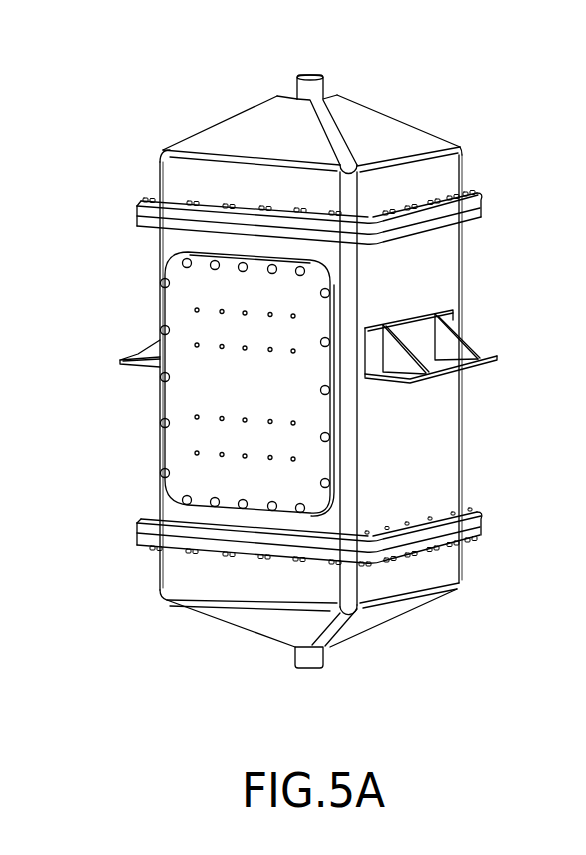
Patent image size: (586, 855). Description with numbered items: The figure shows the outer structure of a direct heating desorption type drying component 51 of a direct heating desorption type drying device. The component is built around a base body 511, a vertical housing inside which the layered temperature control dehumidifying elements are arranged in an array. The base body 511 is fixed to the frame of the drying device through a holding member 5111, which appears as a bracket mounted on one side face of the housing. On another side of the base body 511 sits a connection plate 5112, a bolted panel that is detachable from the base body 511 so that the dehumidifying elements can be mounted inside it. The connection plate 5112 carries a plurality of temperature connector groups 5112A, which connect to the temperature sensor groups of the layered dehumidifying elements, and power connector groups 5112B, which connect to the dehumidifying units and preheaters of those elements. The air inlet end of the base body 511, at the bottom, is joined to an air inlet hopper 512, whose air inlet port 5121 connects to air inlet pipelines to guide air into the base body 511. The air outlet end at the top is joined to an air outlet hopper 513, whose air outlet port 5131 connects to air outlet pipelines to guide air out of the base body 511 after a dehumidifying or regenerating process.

The direct heating desorption type drying component 51 is at (157, 88).
The base body 511 is at (448, 282).
The holding member 5111 is at (455, 323).
The connection plate 5112 is at (168, 346).
The temperature connector groups 5112A is at (196, 308).
The power connector groups 5112B is at (196, 453).
The air inlet hopper 512 is at (247, 620).
The air inlet port 5121 is at (303, 657).
The air outlet hopper 513 is at (455, 170).
The air outlet port 5131 is at (318, 85).